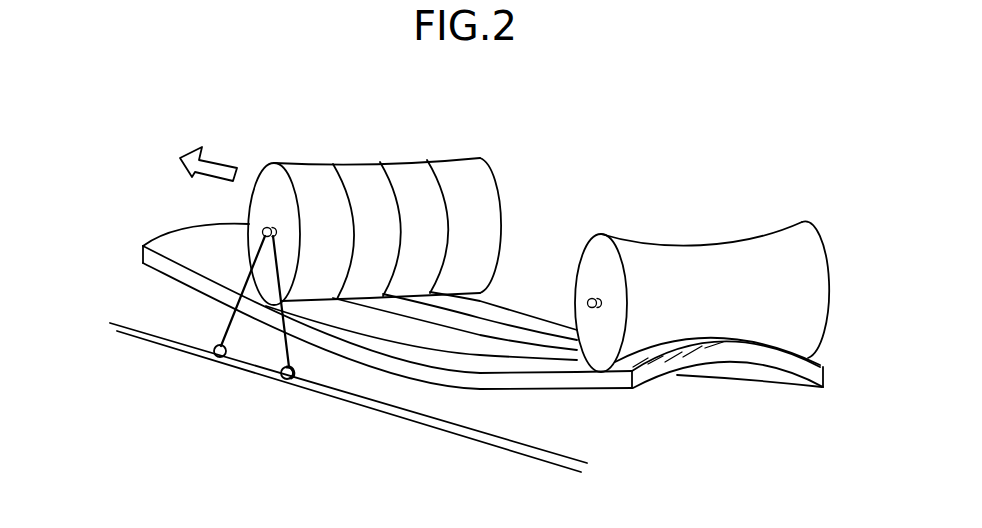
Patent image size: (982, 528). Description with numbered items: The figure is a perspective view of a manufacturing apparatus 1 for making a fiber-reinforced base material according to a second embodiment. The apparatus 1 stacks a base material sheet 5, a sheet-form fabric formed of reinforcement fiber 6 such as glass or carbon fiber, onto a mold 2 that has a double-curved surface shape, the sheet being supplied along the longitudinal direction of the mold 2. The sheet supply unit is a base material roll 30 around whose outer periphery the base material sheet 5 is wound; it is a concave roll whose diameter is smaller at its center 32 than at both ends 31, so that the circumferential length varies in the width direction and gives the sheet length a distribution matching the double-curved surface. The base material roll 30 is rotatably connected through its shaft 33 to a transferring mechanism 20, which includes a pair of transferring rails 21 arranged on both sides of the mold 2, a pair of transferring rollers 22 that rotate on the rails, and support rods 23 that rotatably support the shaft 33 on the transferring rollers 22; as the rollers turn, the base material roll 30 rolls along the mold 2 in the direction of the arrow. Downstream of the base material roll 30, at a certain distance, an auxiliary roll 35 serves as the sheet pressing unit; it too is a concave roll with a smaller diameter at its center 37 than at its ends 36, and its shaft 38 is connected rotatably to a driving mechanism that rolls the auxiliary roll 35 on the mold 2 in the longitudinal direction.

The manufacturing apparatus 1 is at (567, 168).
The mold 2 is at (173, 228).
The base material sheet 5 is at (526, 302).
The reinforcement fiber 6 is at (448, 218).
The transferring mechanism 20 is at (303, 400).
The transferring rails 21 is at (384, 412).
The transferring rollers 22 is at (214, 360).
The support rods 23 is at (226, 328).
The base material roll 30 is at (418, 158).
The ends of base material roll 31 is at (276, 163).
The center of base material roll 32 is at (352, 165).
The shaft of base material roll 33 is at (262, 231).
The auxiliary roll 35 is at (738, 238).
The ends of auxiliary roll 36 is at (598, 232).
The center of auxiliary roll 37 is at (703, 246).
The shaft of auxiliary roll 38 is at (592, 312).